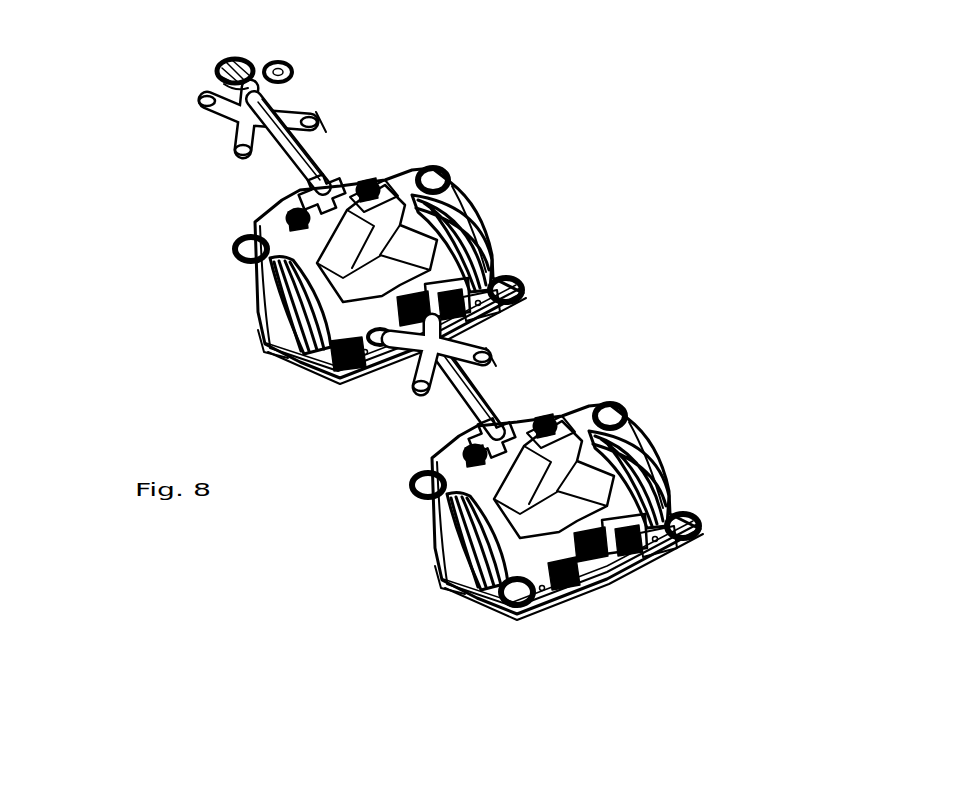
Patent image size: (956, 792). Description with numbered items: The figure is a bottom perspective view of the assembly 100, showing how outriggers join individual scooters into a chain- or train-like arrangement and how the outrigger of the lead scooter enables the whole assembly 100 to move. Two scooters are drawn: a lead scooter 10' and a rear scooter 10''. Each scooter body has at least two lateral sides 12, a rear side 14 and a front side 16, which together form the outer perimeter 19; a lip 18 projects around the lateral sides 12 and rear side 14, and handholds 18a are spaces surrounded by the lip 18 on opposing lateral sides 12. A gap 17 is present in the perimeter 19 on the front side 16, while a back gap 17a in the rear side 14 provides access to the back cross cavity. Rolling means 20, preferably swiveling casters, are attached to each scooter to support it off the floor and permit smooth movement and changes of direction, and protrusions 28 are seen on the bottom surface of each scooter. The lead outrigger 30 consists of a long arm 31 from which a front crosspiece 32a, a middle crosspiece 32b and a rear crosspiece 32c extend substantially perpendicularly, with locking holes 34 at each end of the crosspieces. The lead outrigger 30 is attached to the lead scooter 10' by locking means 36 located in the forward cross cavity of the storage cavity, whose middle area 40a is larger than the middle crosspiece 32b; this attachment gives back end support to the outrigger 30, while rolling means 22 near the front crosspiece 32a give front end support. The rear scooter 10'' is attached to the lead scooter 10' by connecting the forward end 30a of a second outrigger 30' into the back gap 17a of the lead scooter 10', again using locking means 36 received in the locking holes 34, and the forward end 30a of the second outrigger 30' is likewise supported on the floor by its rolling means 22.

The assembly 100 is at (558, 128).
The lead scooter 10' is at (83, 228).
The rear scooter 10'' is at (730, 291).
The lateral sides 12 is at (620, 297).
The rear side 14 is at (548, 303).
The front side 16 is at (385, 438).
The gap 17 is at (385, 188).
The back gap 17a is at (428, 312).
The lip 18 is at (302, 352).
The handholds 18a is at (261, 342).
The outer perimeter 19 is at (482, 224).
The rolling means 20 is at (449, 165).
The rolling means 22 is at (226, 64).
The protrusions 28 is at (466, 198).
The outrigger 30 is at (205, 121).
The second outrigger 30' is at (372, 376).
The forward end 30a is at (222, 80).
The long arm 31 is at (246, 116).
The front crosspiece 32a is at (288, 66).
The middle crosspiece 32b is at (330, 126).
The rear crosspiece 32c is at (308, 192).
The locking holes 34 is at (322, 118).
The locking means 36 is at (430, 166).
The middle area 40a is at (357, 278).